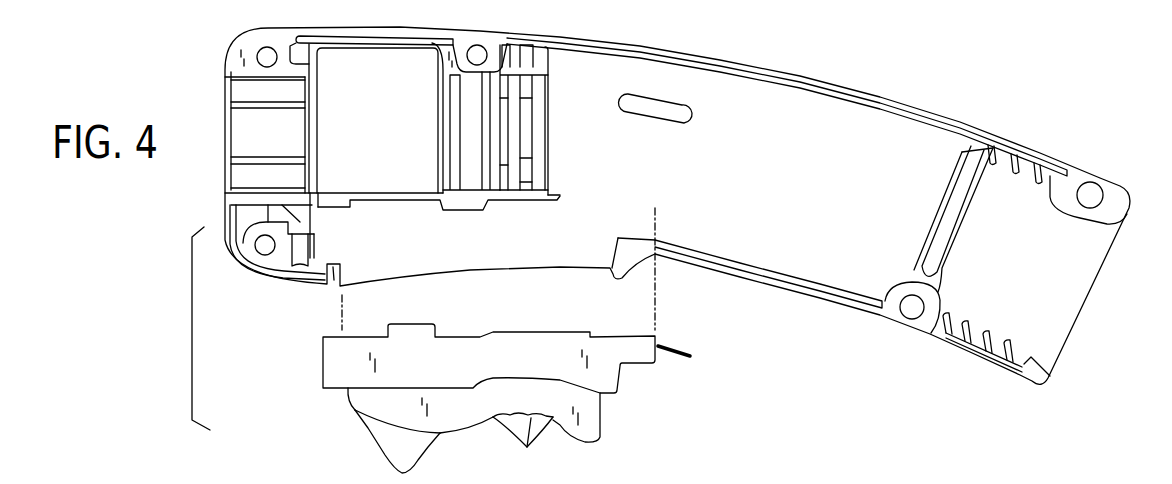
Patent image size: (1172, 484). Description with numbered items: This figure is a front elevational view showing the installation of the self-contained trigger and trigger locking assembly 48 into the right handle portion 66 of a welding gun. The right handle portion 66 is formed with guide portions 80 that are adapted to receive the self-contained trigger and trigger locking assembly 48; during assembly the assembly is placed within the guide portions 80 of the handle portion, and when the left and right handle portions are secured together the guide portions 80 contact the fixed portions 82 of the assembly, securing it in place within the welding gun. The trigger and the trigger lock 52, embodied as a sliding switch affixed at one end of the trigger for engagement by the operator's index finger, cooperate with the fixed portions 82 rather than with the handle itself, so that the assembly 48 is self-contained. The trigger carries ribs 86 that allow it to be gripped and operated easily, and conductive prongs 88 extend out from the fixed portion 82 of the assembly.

The right handle portion 66 is at (863, 92).
The guide portions 80 is at (394, 199).
The fixed portions 82 is at (323, 362).
The self-contained trigger and trigger locking assembly 48 is at (544, 399).
The trigger lock 52 is at (337, 441).
The ribs 86 is at (527, 447).
The conductive prongs 88 is at (672, 347).